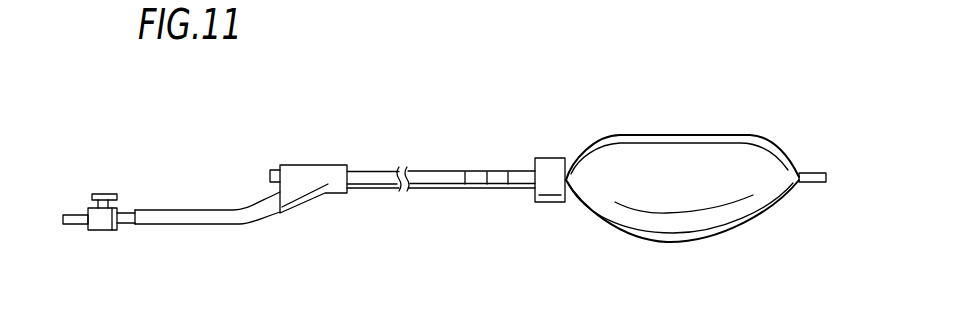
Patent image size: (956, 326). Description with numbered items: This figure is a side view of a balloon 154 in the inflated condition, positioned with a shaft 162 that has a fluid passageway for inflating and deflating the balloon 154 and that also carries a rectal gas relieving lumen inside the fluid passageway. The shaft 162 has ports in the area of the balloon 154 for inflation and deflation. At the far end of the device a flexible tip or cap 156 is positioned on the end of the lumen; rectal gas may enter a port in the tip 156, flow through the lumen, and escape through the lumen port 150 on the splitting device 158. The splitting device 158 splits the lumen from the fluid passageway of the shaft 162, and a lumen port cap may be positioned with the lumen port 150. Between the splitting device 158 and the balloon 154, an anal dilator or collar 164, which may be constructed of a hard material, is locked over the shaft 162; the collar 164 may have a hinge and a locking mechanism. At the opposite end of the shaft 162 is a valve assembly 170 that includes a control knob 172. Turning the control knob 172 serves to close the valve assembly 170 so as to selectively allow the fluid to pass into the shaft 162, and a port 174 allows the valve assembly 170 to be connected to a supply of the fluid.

The lumen port 150 is at (276, 168).
The balloon 154 is at (675, 134).
The flexible tip or cap 156 is at (813, 184).
The splitting device 158 is at (327, 165).
The shaft 162 is at (258, 225).
The anal dilator or collar 164 is at (551, 204).
The valve assembly 170 is at (100, 232).
The control knob 172 is at (107, 192).
The port 174 is at (70, 225).